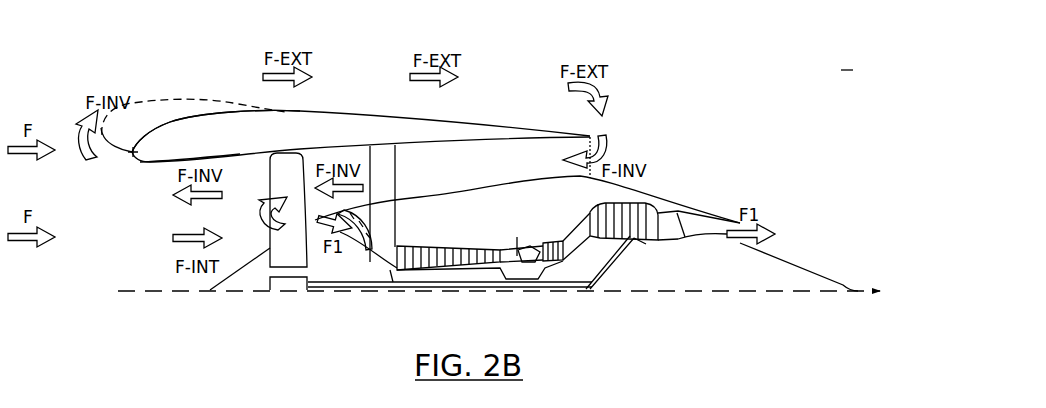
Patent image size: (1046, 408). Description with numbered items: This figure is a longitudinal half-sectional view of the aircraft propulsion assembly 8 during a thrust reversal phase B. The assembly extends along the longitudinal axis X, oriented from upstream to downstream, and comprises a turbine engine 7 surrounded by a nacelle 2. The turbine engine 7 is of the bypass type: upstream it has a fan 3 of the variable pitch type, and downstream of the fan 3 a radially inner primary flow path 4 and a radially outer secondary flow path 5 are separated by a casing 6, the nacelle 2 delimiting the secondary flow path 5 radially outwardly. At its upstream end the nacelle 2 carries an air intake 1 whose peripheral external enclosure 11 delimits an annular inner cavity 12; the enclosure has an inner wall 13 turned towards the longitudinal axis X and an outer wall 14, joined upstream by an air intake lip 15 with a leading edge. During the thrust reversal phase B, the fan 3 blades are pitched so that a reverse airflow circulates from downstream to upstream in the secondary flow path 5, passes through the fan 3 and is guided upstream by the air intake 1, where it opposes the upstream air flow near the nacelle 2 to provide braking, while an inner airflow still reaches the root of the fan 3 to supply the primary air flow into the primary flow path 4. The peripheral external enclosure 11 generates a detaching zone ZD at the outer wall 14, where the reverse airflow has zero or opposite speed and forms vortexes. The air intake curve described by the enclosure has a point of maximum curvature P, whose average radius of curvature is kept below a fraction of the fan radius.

The air intake 1 is at (70, 47).
The peripheral external enclosure 11 is at (180, 122).
The annular inner cavity 12 is at (155, 160).
The inner wall 13 is at (157, 162).
The outer wall 14 is at (155, 152).
The air intake lip 15 is at (88, 114).
The nacelle 2 is at (584, 129).
The fan 3 is at (288, 298).
The primary flow path 4 is at (412, 273).
The secondary flow path 5 is at (466, 180).
The casing 6 is at (466, 230).
The turbine engine 7 is at (700, 187).
The aircraft propulsion assembly 8 is at (660, 86).
The detaching zone ZD is at (225, 100).
The point of maximum curvature P is at (127, 153).
The thrust reversal phase B is at (847, 61).
The longitudinal axis X is at (519, 294).